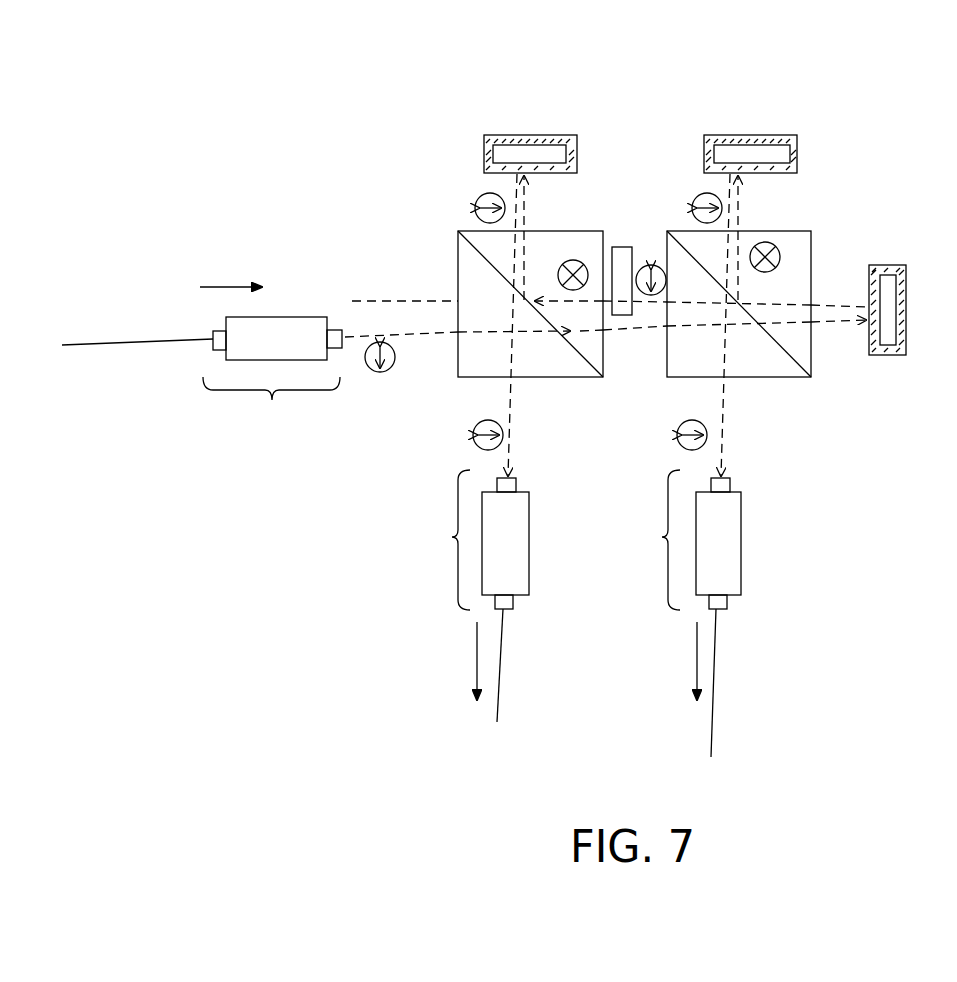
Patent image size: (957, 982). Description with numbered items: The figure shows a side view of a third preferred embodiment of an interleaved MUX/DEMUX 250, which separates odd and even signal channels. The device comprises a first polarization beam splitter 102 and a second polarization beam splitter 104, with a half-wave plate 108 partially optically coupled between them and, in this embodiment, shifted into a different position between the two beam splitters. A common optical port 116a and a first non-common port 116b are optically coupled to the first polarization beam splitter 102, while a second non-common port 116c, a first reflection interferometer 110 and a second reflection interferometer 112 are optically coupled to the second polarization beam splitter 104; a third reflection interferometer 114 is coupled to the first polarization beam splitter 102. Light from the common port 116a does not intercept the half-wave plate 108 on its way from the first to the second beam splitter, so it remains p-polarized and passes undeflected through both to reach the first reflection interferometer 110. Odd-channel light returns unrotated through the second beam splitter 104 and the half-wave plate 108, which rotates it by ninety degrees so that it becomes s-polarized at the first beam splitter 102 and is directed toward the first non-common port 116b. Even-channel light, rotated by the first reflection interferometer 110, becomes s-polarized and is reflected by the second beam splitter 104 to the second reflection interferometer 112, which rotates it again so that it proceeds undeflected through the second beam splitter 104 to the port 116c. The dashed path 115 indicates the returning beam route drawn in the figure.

The interleaved MUX/DEMUX 250 is at (443, 38).
The first polarization beam splitter 102 is at (456, 356).
The second polarization beam splitter 104 is at (811, 358).
The half-wave plate 108 is at (621, 247).
The first reflection interferometer 110 is at (895, 265).
The second reflection interferometer 112 is at (785, 137).
The third reflection interferometer 114 is at (496, 137).
The reflected beam path 115 is at (392, 302).
The common optical port 116a is at (272, 380).
The first non-common port 116b is at (457, 540).
The second non-common port 116c is at (670, 540).